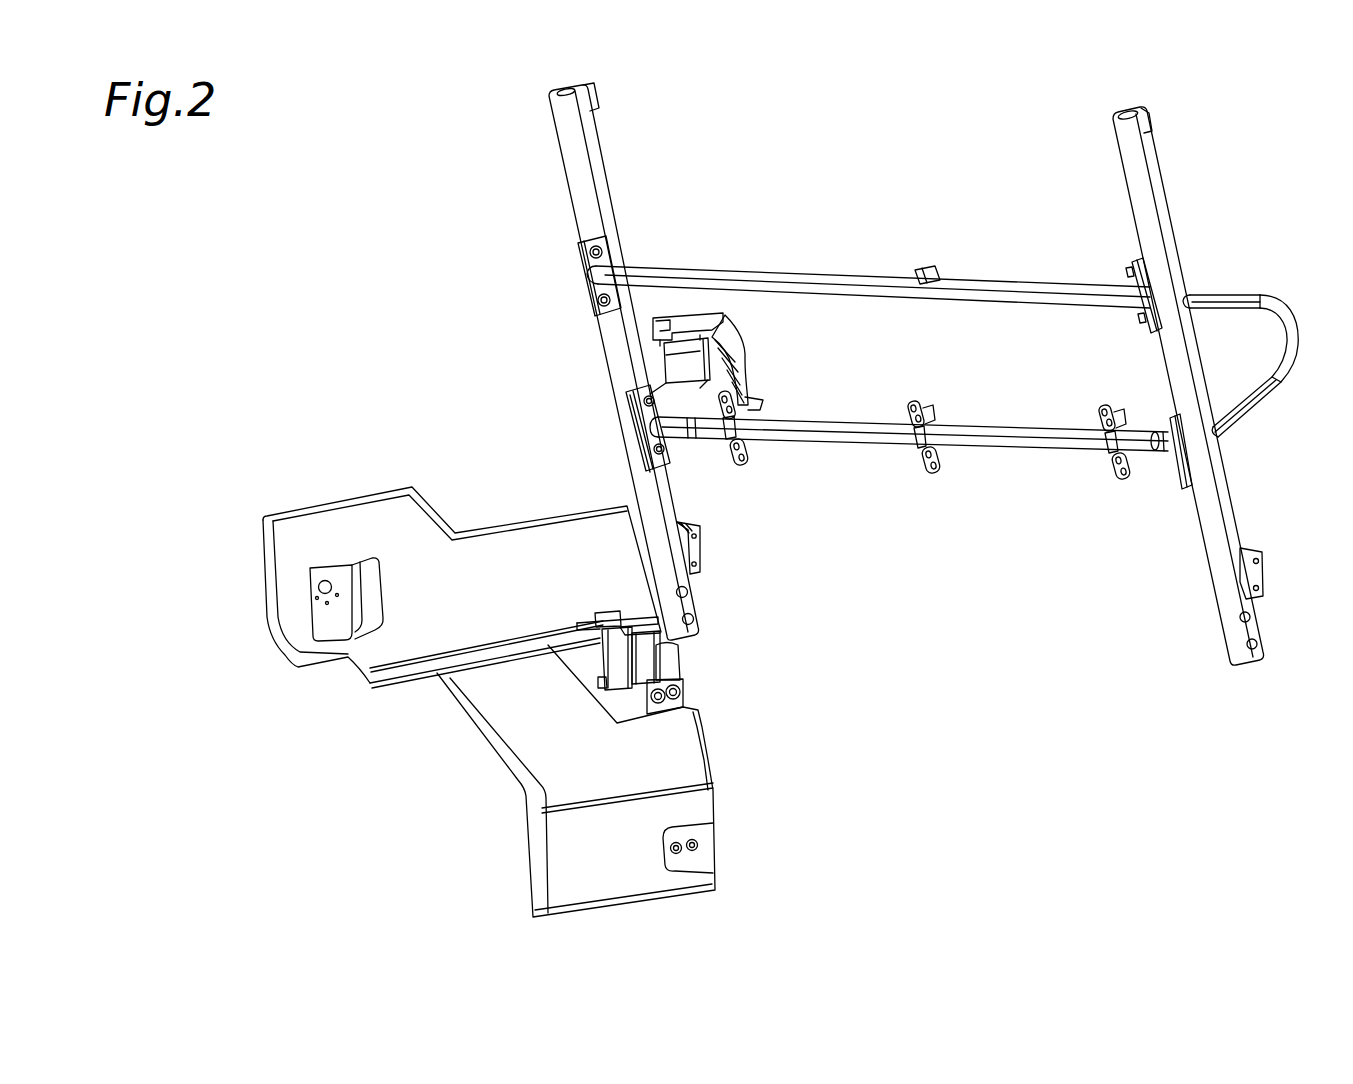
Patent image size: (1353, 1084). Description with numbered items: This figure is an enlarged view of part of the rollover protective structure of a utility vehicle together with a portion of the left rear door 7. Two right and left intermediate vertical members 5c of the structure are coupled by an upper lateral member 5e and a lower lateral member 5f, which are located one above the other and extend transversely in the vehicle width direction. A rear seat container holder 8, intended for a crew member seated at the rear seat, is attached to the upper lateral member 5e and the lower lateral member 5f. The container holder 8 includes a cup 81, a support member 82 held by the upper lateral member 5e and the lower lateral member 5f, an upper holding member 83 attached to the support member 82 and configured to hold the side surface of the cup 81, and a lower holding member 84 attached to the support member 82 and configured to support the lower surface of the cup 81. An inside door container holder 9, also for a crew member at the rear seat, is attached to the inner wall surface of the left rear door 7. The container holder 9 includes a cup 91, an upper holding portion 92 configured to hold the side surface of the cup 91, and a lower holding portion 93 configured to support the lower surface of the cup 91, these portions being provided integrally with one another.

The intermediate vertical member 5c is at (578, 150).
The upper lateral member 5e is at (866, 282).
The lower lateral member 5f is at (862, 428).
The left rear door 7 is at (531, 698).
The rear seat container holder 8 is at (665, 329).
The cup 81 is at (682, 363).
The support member 82 is at (722, 302).
The upper holding member 83 is at (688, 314).
The lower holding member 84 is at (698, 390).
The inside door container holder 9 is at (690, 594).
The cup 91 is at (655, 660).
The upper holding portion 92 is at (610, 622).
The lower holding portion 93 is at (652, 716).